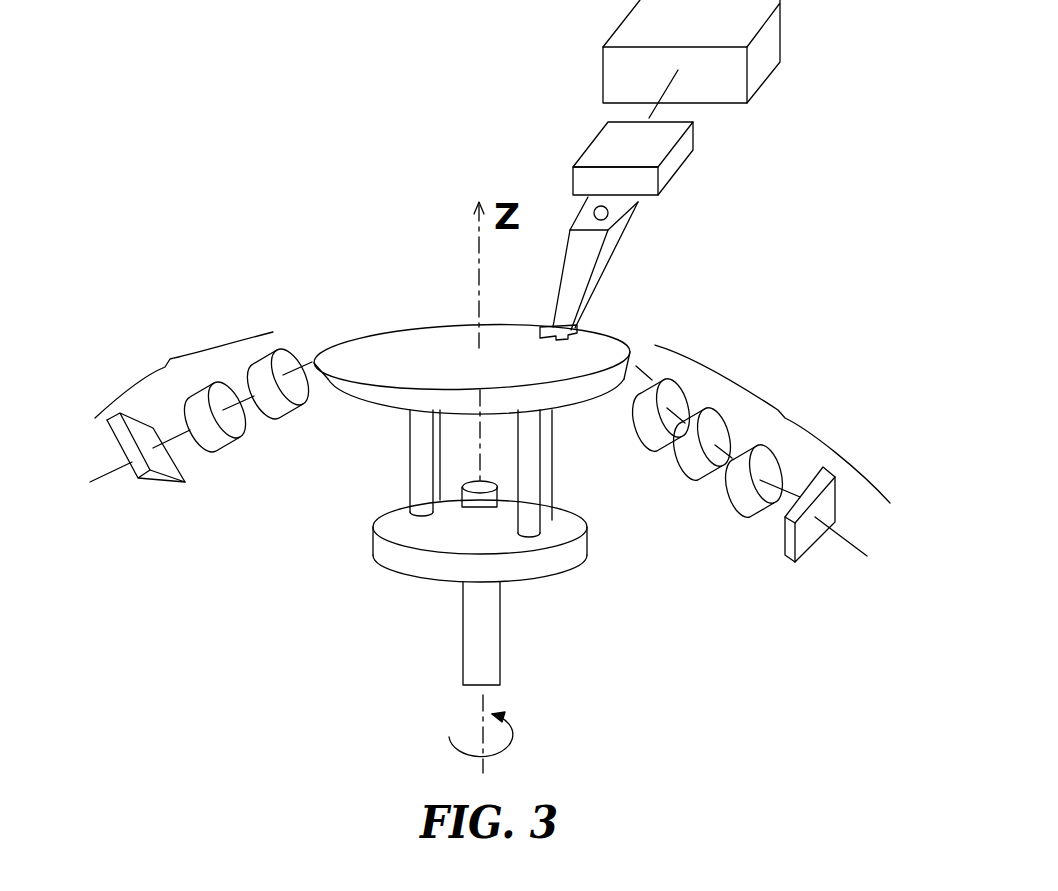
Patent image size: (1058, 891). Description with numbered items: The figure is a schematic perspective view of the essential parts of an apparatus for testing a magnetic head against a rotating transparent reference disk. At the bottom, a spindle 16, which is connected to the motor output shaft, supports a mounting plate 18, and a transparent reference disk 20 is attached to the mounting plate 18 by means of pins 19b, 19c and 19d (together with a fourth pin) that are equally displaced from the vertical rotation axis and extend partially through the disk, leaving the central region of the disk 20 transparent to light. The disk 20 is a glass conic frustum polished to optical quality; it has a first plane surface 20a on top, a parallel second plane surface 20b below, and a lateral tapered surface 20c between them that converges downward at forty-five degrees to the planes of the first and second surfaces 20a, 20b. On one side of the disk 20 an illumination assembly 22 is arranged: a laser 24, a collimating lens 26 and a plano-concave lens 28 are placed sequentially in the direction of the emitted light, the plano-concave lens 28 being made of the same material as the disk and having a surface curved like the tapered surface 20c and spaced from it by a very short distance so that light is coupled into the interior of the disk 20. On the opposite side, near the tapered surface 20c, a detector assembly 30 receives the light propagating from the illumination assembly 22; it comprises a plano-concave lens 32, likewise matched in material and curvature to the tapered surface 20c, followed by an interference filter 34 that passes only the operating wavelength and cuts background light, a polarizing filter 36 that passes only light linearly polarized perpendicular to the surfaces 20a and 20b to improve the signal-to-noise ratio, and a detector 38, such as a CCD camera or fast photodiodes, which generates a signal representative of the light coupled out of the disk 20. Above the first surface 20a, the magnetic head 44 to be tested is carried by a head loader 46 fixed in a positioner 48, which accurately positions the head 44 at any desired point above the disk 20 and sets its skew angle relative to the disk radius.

The spindle 16 is at (485, 633).
The mounting plate 18 is at (570, 550).
The pin 19b is at (432, 478).
The pin 19c is at (438, 447).
The pin 19d is at (532, 487).
The transparent reference disk 20 is at (504, 351).
The first plane surface 20a is at (360, 336).
The second plane surface 20b is at (385, 405).
The lateral tapered surface 20c is at (328, 383).
The illumination assembly 22 is at (203, 424).
The laser 24 is at (157, 460).
The collimating lens 26 is at (215, 442).
The plano-concave lens 28 is at (277, 403).
The detector assembly 30 is at (741, 470).
The plano-concave lens 32 is at (636, 421).
The interference filter 34 is at (705, 452).
The polarizing filter 36 is at (738, 487).
The detector 38 is at (808, 538).
The magnetic head 44 is at (577, 330).
The head loader 46 is at (673, 158).
The positioner 48 is at (760, 60).